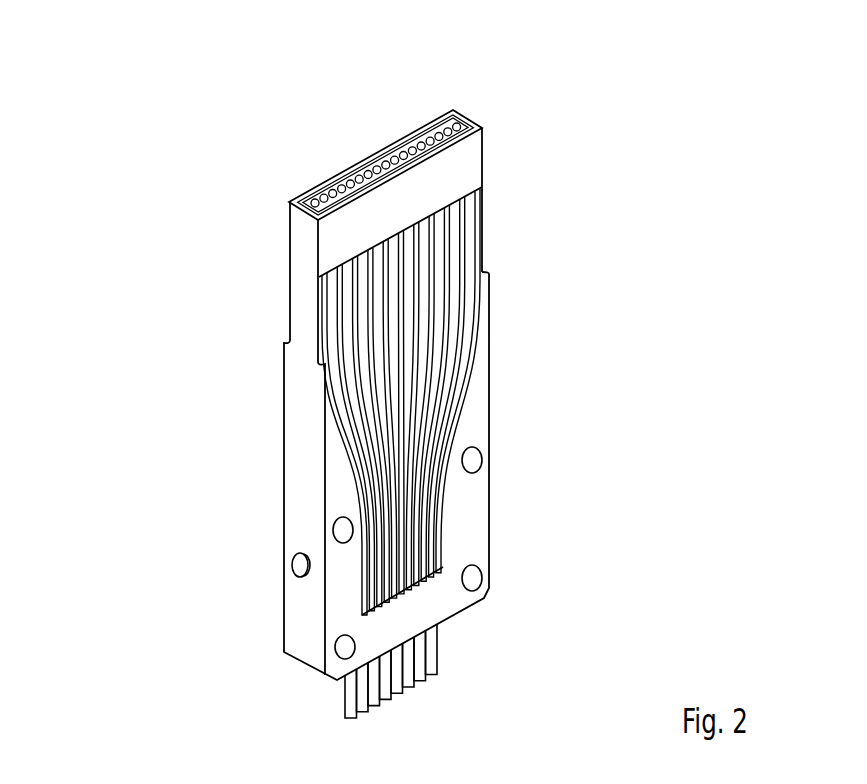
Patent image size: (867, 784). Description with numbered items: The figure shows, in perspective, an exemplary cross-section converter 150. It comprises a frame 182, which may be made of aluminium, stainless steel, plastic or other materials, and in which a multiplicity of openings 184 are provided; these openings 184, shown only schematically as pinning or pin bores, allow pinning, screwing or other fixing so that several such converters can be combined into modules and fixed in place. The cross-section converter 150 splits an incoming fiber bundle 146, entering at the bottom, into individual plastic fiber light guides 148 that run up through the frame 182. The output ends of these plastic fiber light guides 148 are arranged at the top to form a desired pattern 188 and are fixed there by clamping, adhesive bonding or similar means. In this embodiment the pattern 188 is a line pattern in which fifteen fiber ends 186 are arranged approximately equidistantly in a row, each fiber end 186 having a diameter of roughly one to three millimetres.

The cross-section converter 150 is at (246, 264).
The pattern 188 is at (355, 160).
The fiber ends 186 is at (427, 135).
The frame 182 is at (297, 415).
The plastic fiber light guides 148 is at (447, 240).
The openings 184 is at (474, 459).
The fiber bundle 146 is at (420, 667).